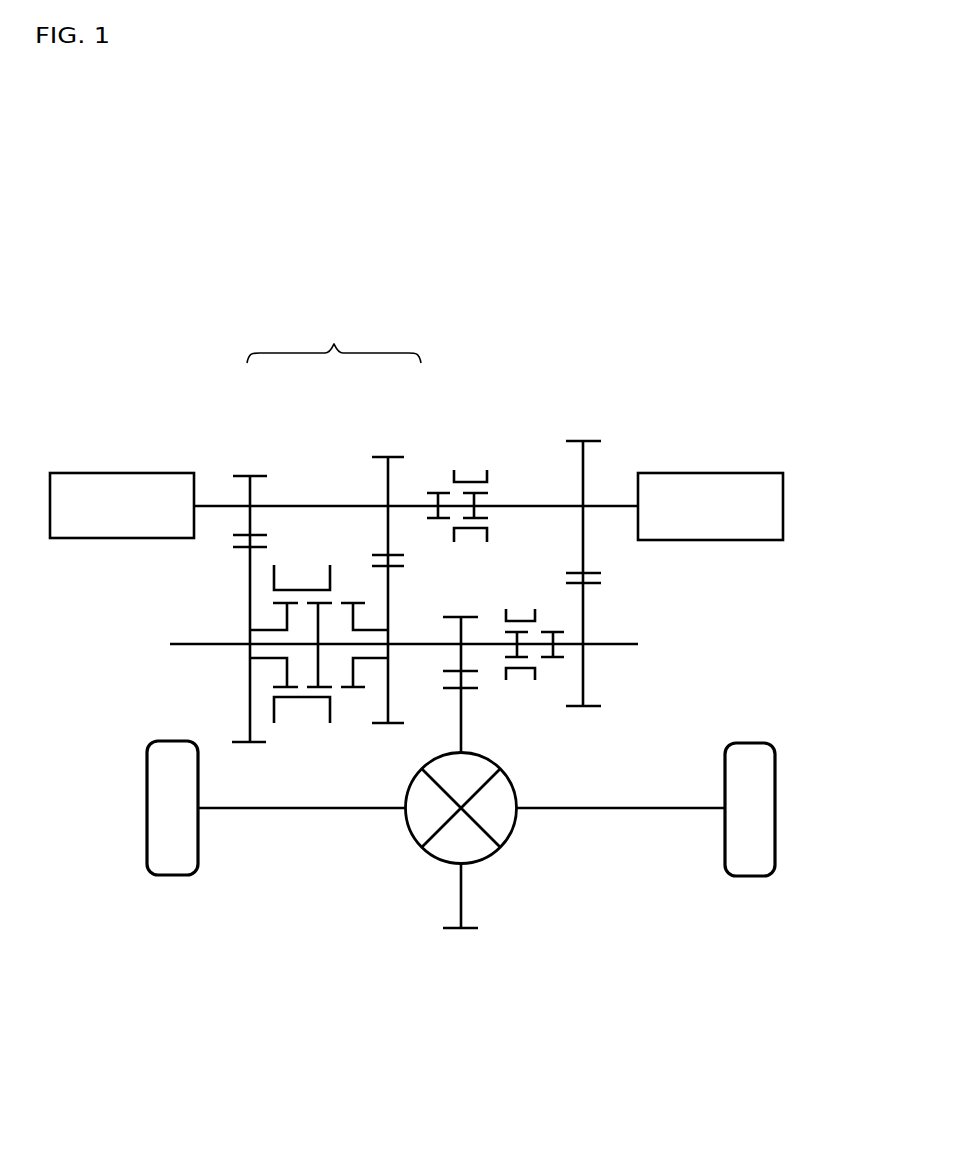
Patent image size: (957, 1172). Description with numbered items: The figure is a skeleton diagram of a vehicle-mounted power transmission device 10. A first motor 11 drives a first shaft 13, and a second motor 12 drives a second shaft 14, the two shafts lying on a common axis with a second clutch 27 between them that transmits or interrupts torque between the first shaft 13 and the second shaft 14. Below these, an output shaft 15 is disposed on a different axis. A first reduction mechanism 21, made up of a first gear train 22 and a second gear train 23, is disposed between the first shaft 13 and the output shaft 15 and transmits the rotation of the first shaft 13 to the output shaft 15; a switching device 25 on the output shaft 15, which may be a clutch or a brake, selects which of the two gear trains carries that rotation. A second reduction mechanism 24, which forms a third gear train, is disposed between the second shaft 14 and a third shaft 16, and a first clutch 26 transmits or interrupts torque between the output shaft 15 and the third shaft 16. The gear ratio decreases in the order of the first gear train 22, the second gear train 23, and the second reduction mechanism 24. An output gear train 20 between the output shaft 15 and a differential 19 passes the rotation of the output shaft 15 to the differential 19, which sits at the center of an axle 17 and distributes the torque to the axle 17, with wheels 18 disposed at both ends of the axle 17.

The power transmission device 10 is at (675, 318).
The first motor 11 is at (127, 483).
The second motor 12 is at (722, 485).
The first shaft 13 is at (226, 503).
The second shaft 14 is at (600, 505).
The output shaft 15 is at (190, 640).
The third shaft 16 is at (623, 640).
The axle 17 is at (323, 810).
The wheels 18 is at (173, 862).
The differential 19 is at (498, 825).
The output gear train 20 is at (476, 955).
The first reduction mechanism 21 is at (334, 341).
The first gear train 22 is at (267, 435).
The second gear train 23 is at (402, 435).
The second reduction mechanism 24 is at (595, 418).
The switching device 25 is at (319, 720).
The first clutch 26 is at (529, 693).
The second clutch 27 is at (483, 448).